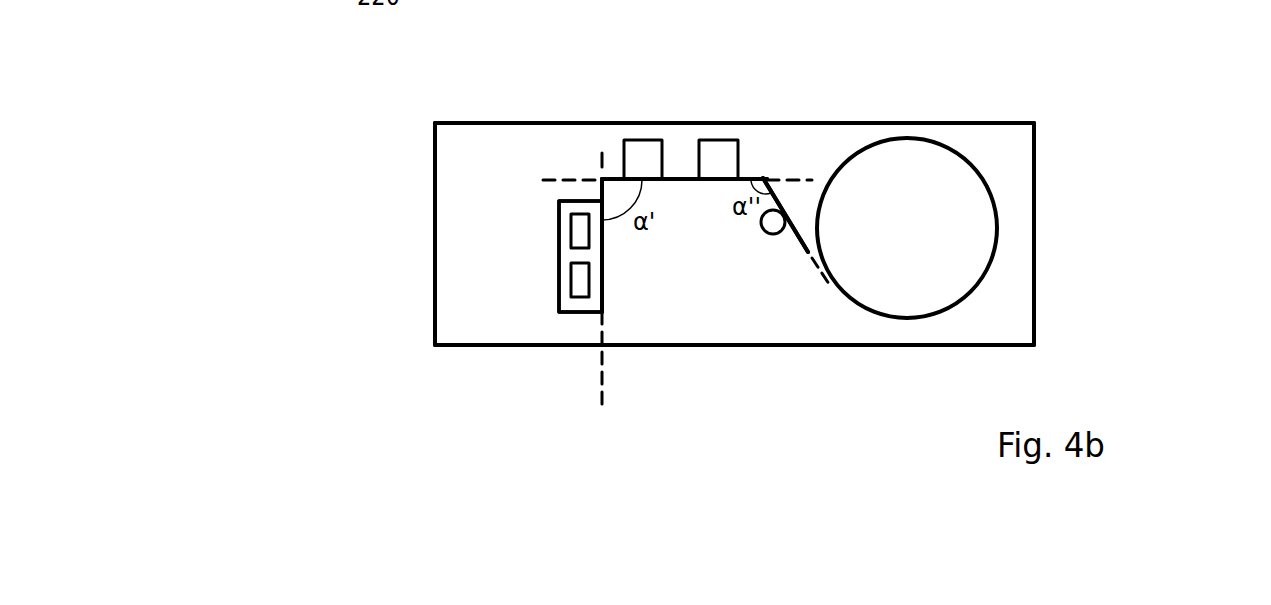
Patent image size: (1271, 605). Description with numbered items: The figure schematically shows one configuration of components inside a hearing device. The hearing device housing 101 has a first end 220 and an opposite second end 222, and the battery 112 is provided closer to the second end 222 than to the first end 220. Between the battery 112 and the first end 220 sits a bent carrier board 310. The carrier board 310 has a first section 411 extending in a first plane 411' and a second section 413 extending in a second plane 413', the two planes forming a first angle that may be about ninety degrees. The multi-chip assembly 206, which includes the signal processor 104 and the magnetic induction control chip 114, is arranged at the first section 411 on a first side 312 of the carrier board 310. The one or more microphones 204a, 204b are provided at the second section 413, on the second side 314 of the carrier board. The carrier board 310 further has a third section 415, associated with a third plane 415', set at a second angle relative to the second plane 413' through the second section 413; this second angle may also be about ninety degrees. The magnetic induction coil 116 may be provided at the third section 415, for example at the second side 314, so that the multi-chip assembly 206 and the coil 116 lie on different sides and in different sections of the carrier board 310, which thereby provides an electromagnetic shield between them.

The hearing device housing 101 is at (1034, 223).
The first end 220 is at (435, 328).
The second end 222 is at (1034, 260).
The battery 112 is at (998, 199).
The first section of carrier board 411 is at (563, 311).
The first plane 411' is at (630, 313).
The second section of carrier board 413 is at (684, 112).
The second side of carrier board 314 is at (688, 184).
The first side of carrier board 312 is at (612, 174).
The microphone 204a is at (640, 140).
The microphone 204b is at (733, 140).
The second plane 413' is at (828, 173).
The third section of carrier board 415 is at (818, 216).
The third plane 415' is at (801, 298).
The magnetic induction coil 116 is at (772, 235).
The multi-chip assembly 206 is at (590, 201).
The carrier board 310 is at (602, 312).
The signal processor 104 is at (571, 233).
The magnetic induction control chip 114 is at (571, 275).